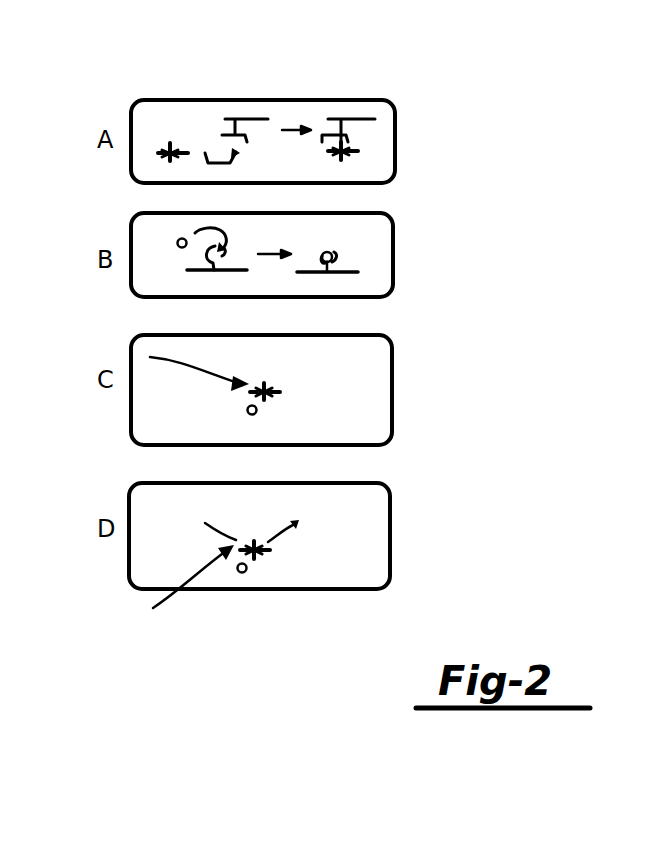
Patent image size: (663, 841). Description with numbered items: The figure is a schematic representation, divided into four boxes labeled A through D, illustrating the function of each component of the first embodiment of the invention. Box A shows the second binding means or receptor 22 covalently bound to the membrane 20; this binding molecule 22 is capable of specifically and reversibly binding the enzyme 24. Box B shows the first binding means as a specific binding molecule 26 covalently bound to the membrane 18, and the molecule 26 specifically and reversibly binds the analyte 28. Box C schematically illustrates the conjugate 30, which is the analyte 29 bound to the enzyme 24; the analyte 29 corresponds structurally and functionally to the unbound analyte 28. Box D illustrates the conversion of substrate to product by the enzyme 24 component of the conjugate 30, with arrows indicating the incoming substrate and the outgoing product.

The membrane 18 is at (240, 270).
The membrane 20 is at (340, 118).
The receptor 22 is at (238, 140).
The enzyme 24 is at (170, 145).
The specific binding molecule 26 is at (205, 253).
The analyte 28 is at (180, 240).
The analyte 29 is at (258, 413).
The conjugate 30 is at (150, 357).